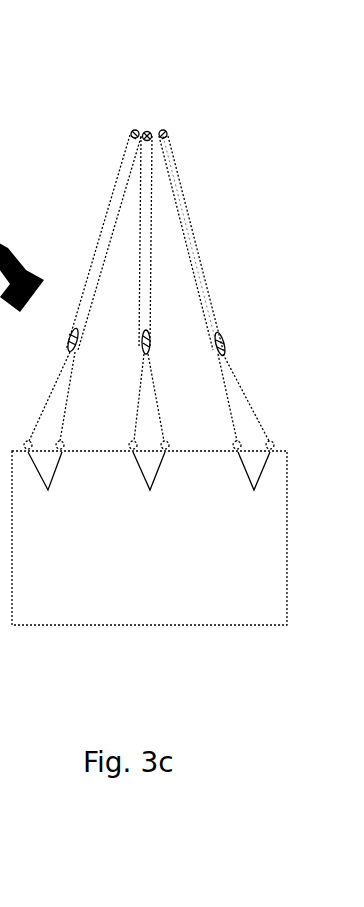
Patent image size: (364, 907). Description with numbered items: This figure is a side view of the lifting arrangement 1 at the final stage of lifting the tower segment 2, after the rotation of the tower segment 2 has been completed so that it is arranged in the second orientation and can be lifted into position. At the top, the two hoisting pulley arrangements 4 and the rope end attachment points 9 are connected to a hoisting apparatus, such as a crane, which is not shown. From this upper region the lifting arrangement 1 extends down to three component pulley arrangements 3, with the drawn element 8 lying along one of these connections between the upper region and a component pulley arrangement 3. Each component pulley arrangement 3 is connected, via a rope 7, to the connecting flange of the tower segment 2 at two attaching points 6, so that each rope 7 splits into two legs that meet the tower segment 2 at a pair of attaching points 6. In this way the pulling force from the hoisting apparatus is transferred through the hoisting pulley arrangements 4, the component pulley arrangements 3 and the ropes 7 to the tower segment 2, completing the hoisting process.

The lifting arrangement 1 is at (197, 158).
The tower segment 2 is at (199, 603).
The component pulley arrangement 3 is at (66, 346).
The hoisting pulley arrangement 4 is at (130, 134).
The attaching point 6 is at (149, 482).
The rope 7 is at (48, 390).
The strut 8 is at (197, 252).
The rope end attachment point 9 is at (146, 131).